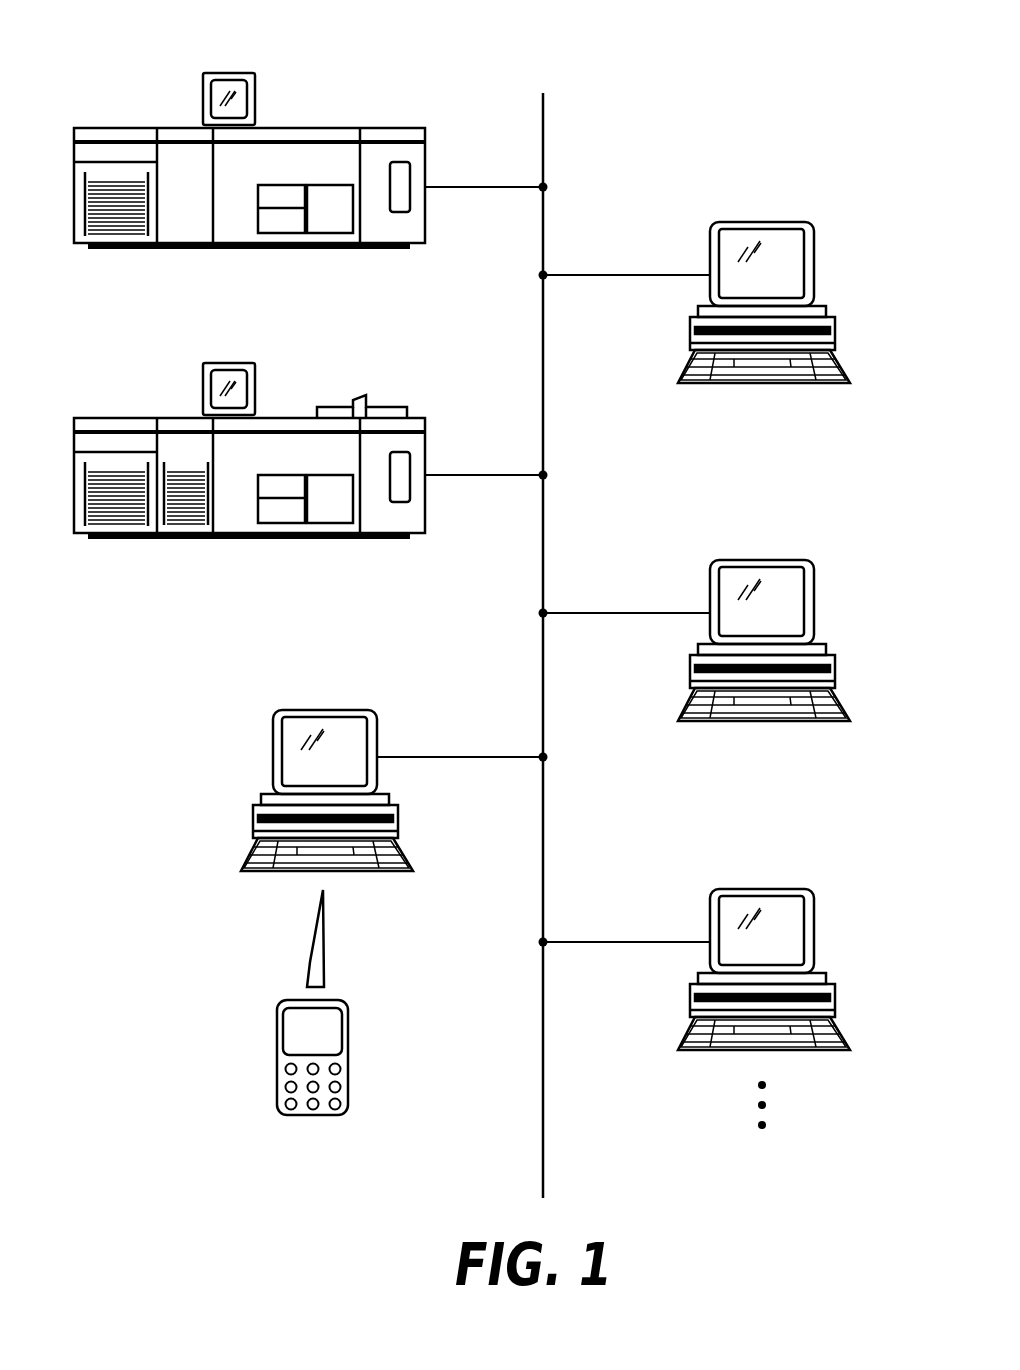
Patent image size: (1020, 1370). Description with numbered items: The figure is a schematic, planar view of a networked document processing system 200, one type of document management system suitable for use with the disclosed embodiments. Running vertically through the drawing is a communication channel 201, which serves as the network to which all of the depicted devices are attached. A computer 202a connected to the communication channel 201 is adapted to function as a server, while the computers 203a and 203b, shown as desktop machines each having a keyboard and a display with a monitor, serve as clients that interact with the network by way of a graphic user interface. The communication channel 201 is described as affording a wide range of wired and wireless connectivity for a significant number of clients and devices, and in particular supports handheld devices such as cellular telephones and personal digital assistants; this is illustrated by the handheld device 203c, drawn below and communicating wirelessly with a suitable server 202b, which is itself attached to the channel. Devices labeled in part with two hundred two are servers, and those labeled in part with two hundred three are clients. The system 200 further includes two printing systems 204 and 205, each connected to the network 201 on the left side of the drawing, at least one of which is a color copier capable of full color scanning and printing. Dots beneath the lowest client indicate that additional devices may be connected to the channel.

The networked document processing system 200 is at (690, 68).
The communication channel 201 is at (543, 133).
The computer 202a is at (780, 222).
The server 202b is at (343, 710).
The computer 203a is at (780, 560).
The computer 203b is at (780, 889).
The handheld device 203c is at (350, 1008).
The printing system 204 is at (292, 55).
The printing system 205 is at (292, 378).